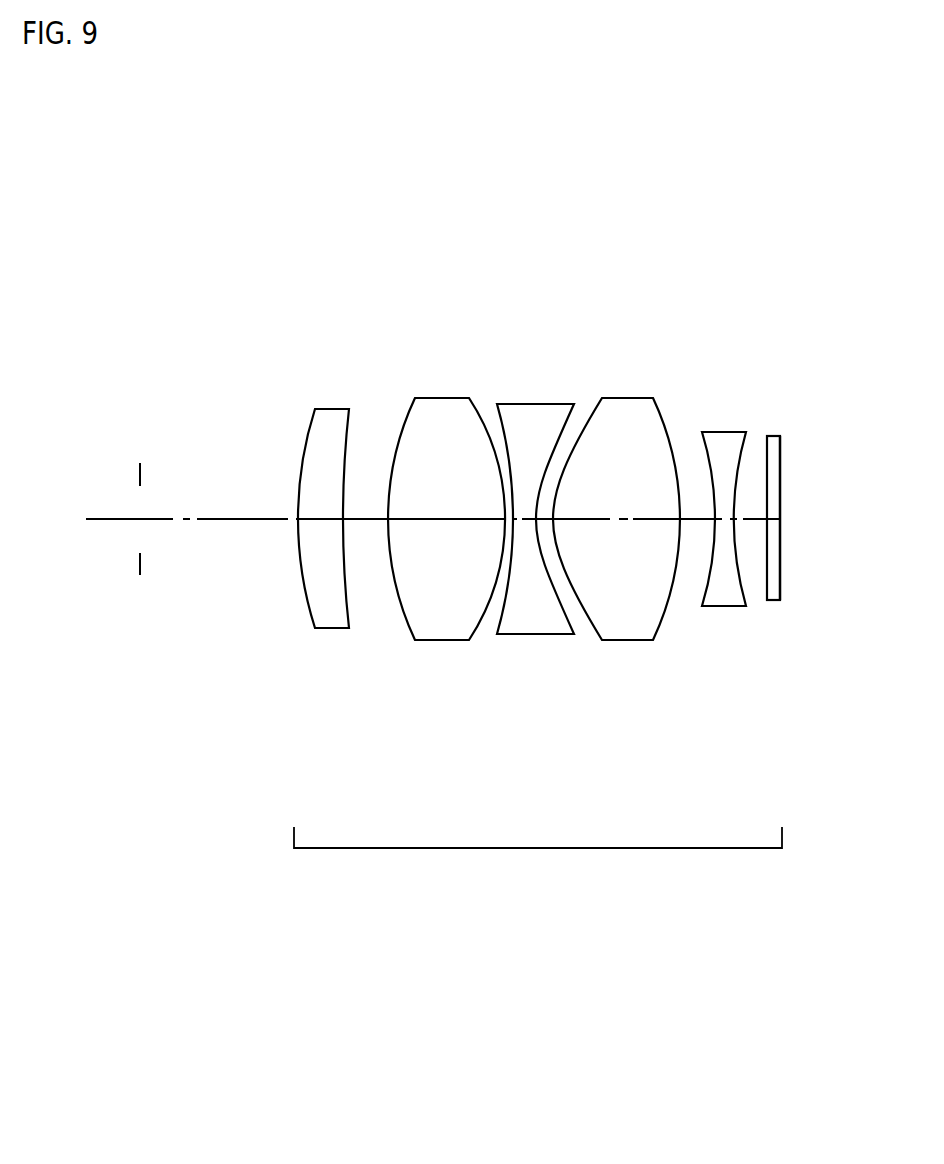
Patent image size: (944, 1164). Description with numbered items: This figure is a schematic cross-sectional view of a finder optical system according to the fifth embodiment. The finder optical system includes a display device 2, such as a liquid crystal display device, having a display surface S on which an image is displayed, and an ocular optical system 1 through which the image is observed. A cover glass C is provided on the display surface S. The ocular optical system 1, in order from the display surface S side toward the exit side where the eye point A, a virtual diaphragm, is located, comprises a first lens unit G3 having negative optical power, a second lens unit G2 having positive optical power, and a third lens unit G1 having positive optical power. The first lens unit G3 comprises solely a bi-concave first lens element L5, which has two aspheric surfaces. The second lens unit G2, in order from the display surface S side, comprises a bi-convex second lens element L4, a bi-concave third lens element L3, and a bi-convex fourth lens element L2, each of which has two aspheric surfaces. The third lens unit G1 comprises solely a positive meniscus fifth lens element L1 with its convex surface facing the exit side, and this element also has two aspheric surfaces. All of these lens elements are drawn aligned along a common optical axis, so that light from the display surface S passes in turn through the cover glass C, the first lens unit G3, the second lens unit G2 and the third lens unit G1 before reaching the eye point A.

The ocular optical system 1 is at (538, 641).
The display device 2 is at (801, 516).
The eye point A is at (140, 463).
The cover glass C is at (772, 442).
The display surface S is at (781, 485).
The fifth lens element L1 is at (332, 423).
The fourth lens element L2 is at (437, 415).
The third lens element L3 is at (529, 420).
The second lens element L4 is at (617, 415).
The first lens element L5 is at (723, 445).
The third lens unit G1 is at (327, 548).
The second lens unit G2 is at (534, 548).
The first lens unit G3 is at (725, 548).